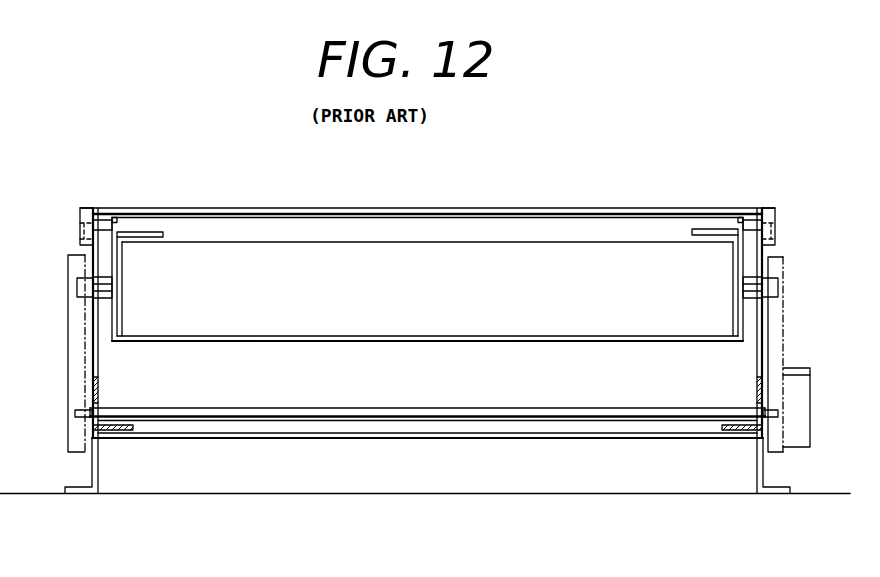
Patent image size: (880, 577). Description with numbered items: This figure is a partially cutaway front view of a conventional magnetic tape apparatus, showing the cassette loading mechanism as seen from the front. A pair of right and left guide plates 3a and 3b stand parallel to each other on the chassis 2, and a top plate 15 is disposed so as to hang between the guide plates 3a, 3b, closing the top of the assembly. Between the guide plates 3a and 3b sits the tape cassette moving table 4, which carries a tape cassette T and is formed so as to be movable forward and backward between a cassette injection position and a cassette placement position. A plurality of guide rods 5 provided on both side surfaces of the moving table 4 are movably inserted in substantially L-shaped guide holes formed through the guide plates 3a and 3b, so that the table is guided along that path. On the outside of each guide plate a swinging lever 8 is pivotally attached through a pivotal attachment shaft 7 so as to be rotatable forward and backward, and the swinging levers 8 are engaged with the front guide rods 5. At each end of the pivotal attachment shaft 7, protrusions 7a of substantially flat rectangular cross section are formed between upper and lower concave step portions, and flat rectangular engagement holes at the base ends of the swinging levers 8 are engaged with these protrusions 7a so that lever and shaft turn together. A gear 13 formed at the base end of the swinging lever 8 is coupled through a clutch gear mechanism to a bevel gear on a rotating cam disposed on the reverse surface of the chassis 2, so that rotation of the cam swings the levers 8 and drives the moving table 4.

The chassis 2 is at (412, 439).
The guide plate 3a is at (756, 360).
The guide plate 3b is at (99, 360).
The tape cassette moving table 4 is at (542, 343).
The guide rod 5 is at (84, 232).
The pivotal attachment shaft 7 is at (378, 410).
The protrusion 7a is at (76, 412).
The swinging lever 8 is at (75, 333).
The gear 13 is at (798, 440).
The top plate 15 is at (327, 210).
The object T is at (477, 250).